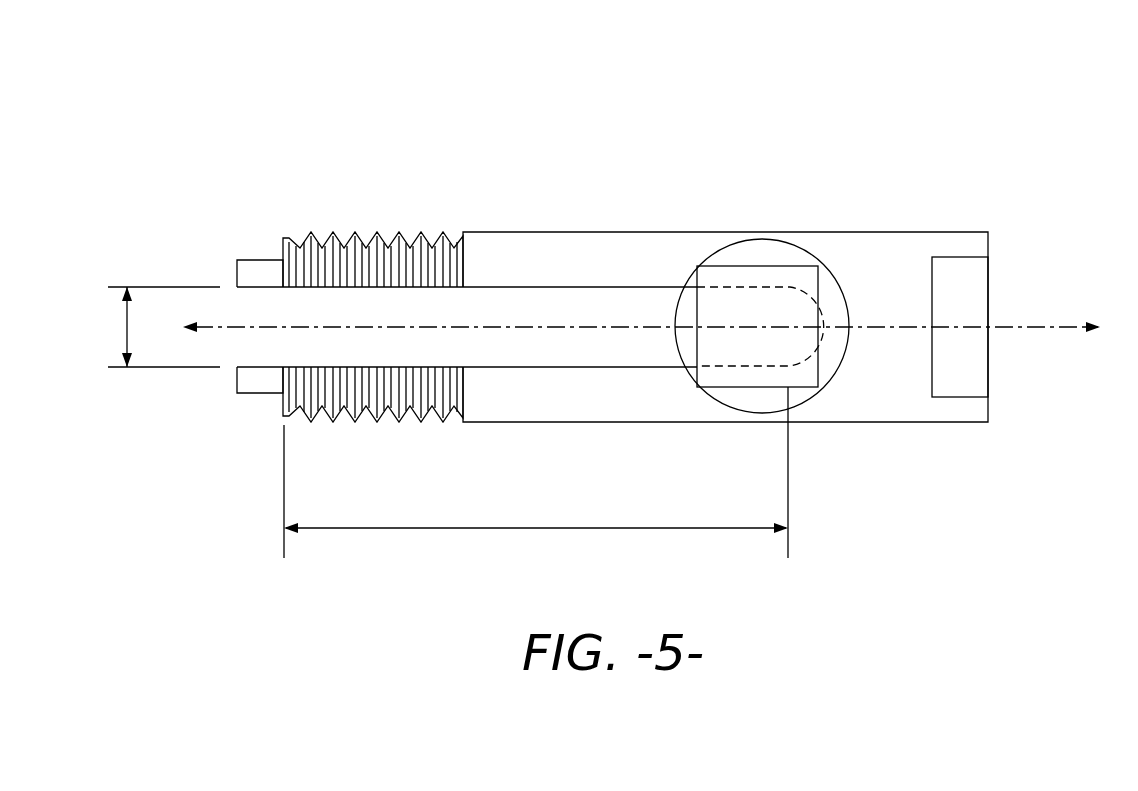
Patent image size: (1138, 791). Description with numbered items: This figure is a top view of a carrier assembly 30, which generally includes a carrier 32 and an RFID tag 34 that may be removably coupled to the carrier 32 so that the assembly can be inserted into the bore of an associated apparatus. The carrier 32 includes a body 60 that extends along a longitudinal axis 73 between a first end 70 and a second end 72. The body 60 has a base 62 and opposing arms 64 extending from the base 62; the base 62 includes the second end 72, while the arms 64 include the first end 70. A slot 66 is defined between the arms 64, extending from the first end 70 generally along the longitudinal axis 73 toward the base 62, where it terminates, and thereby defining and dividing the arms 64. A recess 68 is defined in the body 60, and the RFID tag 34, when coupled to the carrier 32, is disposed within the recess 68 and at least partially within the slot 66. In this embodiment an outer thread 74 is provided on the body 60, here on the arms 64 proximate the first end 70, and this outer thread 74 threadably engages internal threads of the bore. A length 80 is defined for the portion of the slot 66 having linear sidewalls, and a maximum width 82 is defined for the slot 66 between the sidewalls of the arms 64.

The carrier assembly 30 is at (380, 118).
The carrier 32 is at (857, 222).
The RFID tag 34 is at (738, 377).
The body 60 is at (808, 218).
The base 62 is at (890, 250).
The arms 64 is at (558, 250).
The slot 66 is at (494, 313).
The recess 68 is at (833, 355).
The first end 70 is at (237, 275).
The second end 72 is at (975, 358).
The longitudinal axis 73 is at (1020, 325).
The outer thread 74 is at (375, 233).
The length 80 is at (478, 530).
The maximum width 82 is at (125, 330).